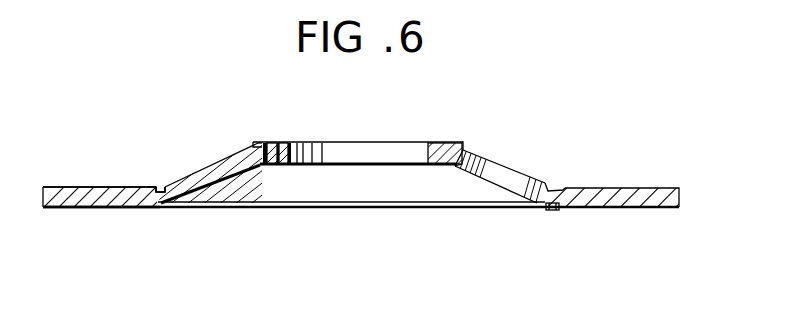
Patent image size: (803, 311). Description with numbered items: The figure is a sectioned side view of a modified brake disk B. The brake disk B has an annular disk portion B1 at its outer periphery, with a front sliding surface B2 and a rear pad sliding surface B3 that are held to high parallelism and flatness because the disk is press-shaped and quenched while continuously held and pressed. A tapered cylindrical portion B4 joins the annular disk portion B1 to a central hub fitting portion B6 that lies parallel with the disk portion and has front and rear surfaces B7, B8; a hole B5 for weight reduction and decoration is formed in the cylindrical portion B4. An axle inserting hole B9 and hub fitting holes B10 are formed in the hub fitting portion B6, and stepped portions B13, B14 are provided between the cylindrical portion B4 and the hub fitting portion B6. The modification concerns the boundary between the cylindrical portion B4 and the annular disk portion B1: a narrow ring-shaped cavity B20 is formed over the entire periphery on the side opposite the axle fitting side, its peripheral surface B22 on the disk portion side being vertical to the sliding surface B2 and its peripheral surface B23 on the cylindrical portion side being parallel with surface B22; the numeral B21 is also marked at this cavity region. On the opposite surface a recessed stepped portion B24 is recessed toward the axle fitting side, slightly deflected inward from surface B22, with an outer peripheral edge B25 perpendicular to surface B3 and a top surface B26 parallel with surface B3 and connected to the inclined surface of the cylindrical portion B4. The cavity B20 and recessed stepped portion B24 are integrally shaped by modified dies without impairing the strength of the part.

The brake disk B is at (611, 184).
The annular disk portion B1 is at (78, 190).
The front surface B2 is at (80, 187).
The rear surface B3 is at (140, 205).
The tapered cylindrical portion B4 is at (227, 152).
The hole B5 is at (507, 175).
The hub fitting portion B6 is at (440, 148).
The front surface of hub fitting portion B7 is at (453, 140).
The rear surface of hub fitting portion B8 is at (440, 168).
The axle inserting hole B9 is at (360, 150).
The hub fitting holes B10 is at (273, 141).
The stepped portion B13 is at (253, 142).
The stepped portion B14 is at (258, 175).
The cavity B20 is at (162, 180).
The groove side wall B21 is at (157, 184).
The peripheral surface on annular disk portion side B22 is at (155, 186).
The peripheral surface on cylindrical portion side B23 is at (167, 185).
The recessed stepped portion B24 is at (551, 211).
The peripheral edge B25 is at (557, 210).
The top surface B26 is at (547, 205).